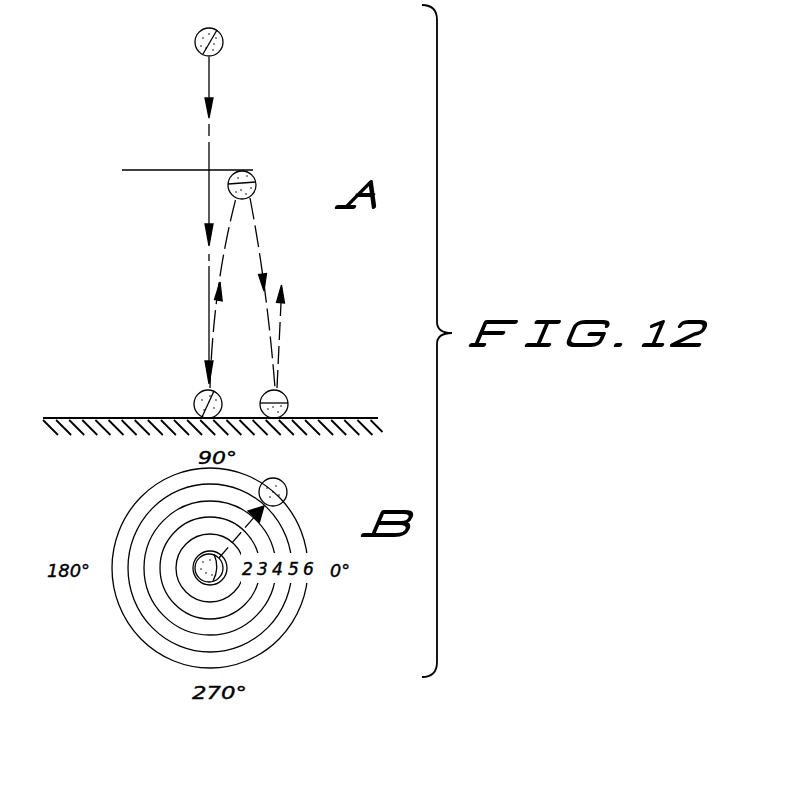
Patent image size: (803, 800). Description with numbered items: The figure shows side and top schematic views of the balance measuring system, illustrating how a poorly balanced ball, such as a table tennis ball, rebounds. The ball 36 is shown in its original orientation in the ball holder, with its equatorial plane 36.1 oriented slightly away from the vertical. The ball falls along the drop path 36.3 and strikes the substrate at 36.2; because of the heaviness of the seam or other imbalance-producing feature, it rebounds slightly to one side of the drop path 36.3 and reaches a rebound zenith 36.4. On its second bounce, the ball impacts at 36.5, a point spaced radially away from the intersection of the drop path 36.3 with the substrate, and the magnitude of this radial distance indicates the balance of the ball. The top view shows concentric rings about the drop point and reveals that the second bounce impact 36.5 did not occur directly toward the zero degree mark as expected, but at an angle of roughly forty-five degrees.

The ball 36 is at (223, 40).
The equatorial plane of the ball 36.1 is at (222, 46).
The ball striking the substrate 36.2 is at (200, 393).
The drop path 36.3 is at (207, 202).
The rebound zenith 36.4 is at (167, 169).
The second bounce impact 36.5 is at (284, 393).